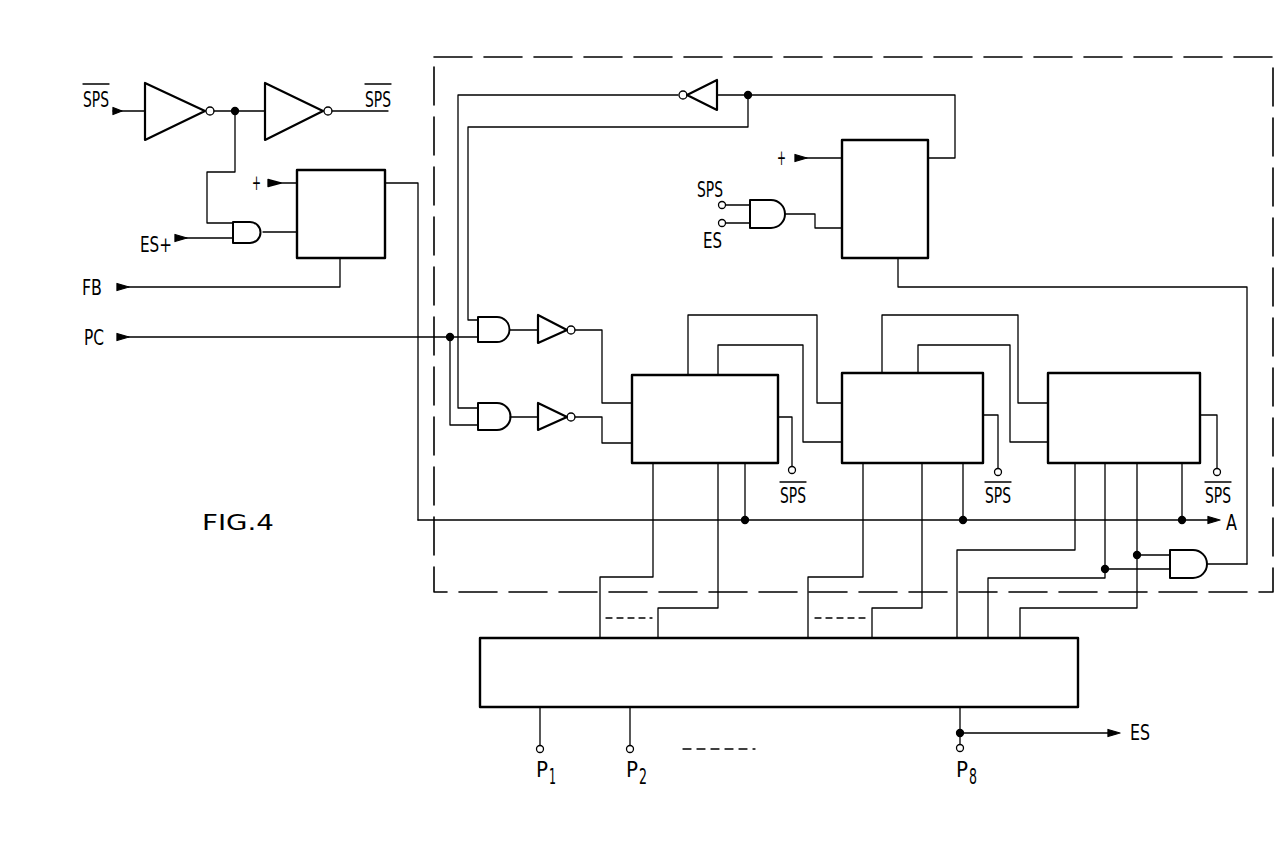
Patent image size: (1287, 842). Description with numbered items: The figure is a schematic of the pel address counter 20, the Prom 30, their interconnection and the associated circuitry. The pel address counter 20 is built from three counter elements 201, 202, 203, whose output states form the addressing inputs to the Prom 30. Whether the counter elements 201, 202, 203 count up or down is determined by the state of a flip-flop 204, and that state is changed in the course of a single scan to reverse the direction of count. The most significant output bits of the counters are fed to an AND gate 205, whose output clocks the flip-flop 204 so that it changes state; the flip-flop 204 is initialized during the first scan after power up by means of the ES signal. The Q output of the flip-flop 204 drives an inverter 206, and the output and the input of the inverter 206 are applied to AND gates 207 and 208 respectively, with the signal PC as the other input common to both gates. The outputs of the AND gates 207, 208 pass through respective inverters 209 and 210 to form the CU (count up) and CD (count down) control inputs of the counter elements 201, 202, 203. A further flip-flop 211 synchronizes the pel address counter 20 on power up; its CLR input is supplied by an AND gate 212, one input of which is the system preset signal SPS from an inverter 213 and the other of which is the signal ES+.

The pel address counter 20 is at (470, 57).
The Prom 30 is at (480, 655).
The counter element 201 is at (657, 358).
The counter element 202 is at (860, 373).
The counter element 203 is at (1073, 373).
The flip-flop 204 is at (930, 205).
The AND gate 205 is at (1207, 576).
The inverter 206 is at (693, 87).
The AND gate 207 is at (512, 391).
The AND gate 208 is at (497, 317).
The inverter 209 is at (572, 391).
The inverter 210 is at (553, 315).
The flip-flop 211 is at (337, 170).
The AND gate 212 is at (240, 246).
The inverter 213 is at (189, 100).